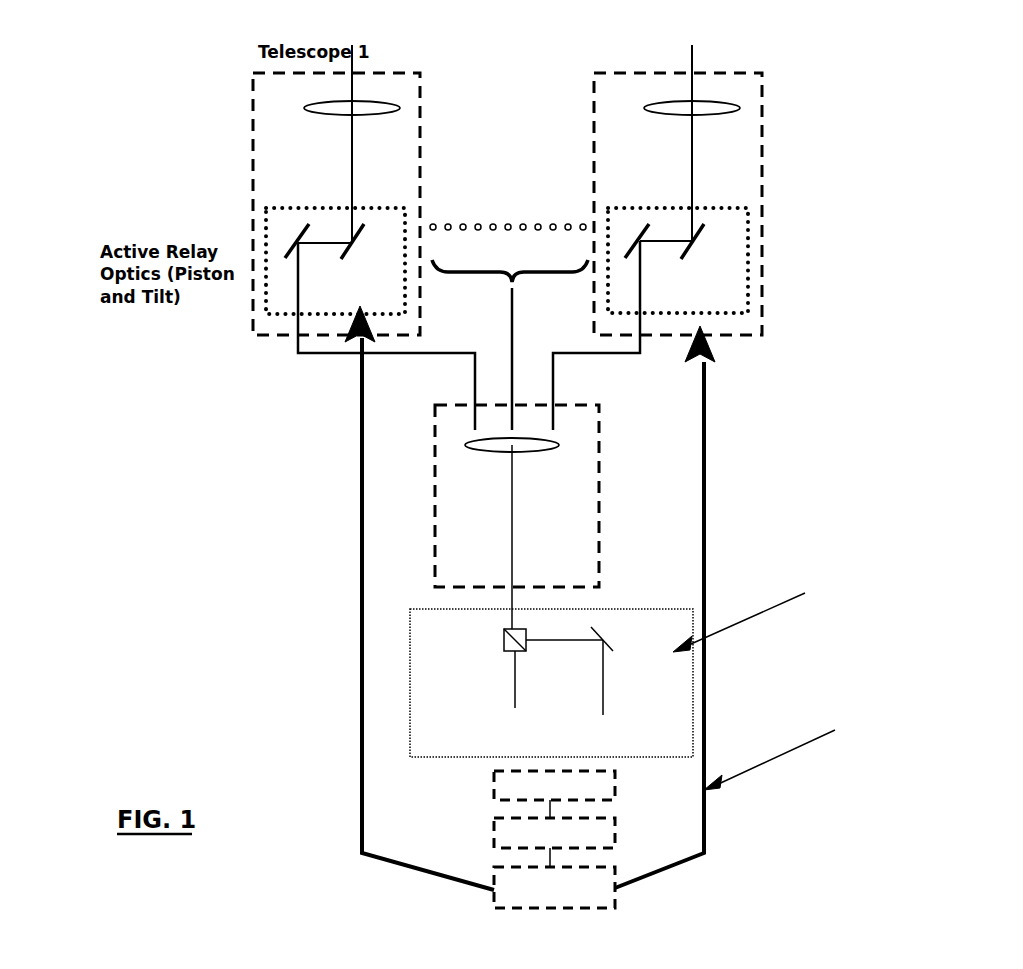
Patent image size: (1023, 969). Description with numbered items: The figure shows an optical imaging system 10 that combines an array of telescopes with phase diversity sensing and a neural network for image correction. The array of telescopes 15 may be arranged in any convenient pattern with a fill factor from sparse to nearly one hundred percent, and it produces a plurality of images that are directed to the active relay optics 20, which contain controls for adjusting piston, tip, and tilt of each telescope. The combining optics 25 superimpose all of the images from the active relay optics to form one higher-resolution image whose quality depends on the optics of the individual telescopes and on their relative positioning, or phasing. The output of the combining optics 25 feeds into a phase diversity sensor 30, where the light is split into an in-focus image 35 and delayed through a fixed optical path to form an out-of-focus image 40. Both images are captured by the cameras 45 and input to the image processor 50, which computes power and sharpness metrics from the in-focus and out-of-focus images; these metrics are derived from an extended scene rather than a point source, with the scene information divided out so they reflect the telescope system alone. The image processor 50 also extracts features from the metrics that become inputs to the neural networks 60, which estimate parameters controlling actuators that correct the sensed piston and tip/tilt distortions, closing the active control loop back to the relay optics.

The optical imaging system 10 is at (980, 40).
The array of telescopes 15 is at (762, 88).
The active relay optics 20 is at (748, 218).
The combining optics 25 is at (565, 403).
The phase diversity sensor 30 is at (610, 607).
The in-focus image 35 is at (515, 706).
The out-of-focus image 40 is at (603, 695).
The cameras 45 is at (615, 783).
The image processor 50 is at (615, 805).
The neural networks 60 is at (568, 867).